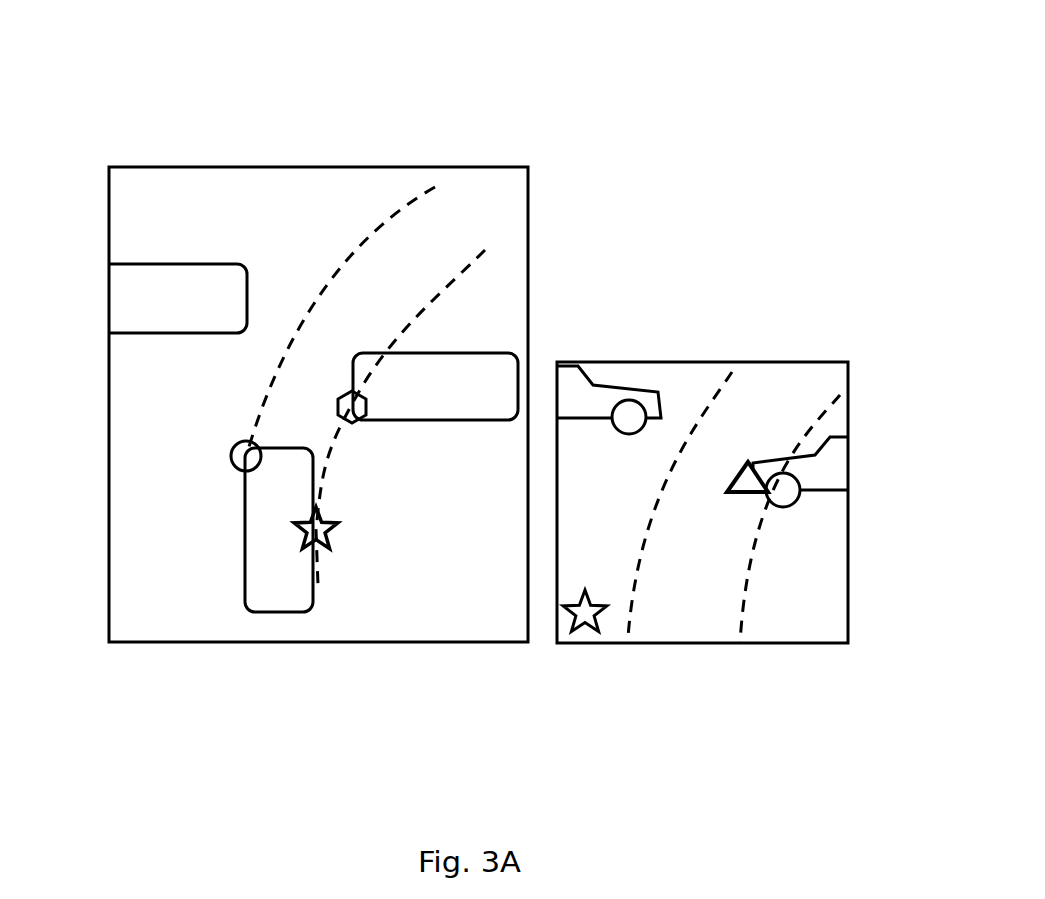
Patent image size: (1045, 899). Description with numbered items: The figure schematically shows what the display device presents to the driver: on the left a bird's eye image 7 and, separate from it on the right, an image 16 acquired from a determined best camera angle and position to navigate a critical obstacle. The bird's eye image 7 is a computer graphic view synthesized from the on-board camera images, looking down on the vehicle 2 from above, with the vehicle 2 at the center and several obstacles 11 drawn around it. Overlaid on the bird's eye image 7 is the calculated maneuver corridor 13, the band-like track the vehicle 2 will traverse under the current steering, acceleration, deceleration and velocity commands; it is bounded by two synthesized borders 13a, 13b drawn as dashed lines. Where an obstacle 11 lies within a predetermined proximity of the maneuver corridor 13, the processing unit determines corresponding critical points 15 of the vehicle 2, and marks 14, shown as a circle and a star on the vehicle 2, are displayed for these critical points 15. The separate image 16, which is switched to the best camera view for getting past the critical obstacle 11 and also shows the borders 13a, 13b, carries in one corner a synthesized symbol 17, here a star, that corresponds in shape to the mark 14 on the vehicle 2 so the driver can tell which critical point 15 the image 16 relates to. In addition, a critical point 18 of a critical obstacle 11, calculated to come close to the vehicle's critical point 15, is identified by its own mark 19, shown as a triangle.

The bird's eye image 7 is at (181, 146).
The image 16 is at (592, 340).
The obstacle 11 is at (178, 262).
The vehicle 2 is at (282, 545).
The maneuver corridor 13 is at (544, 369).
The border 13a is at (722, 387).
The border 13b is at (830, 408).
The mark 14 is at (268, 564).
The critical point 15 is at (240, 466).
The synthesized symbol 17 is at (584, 645).
The critical point 18 is at (723, 609).
The mark 19 is at (740, 495).